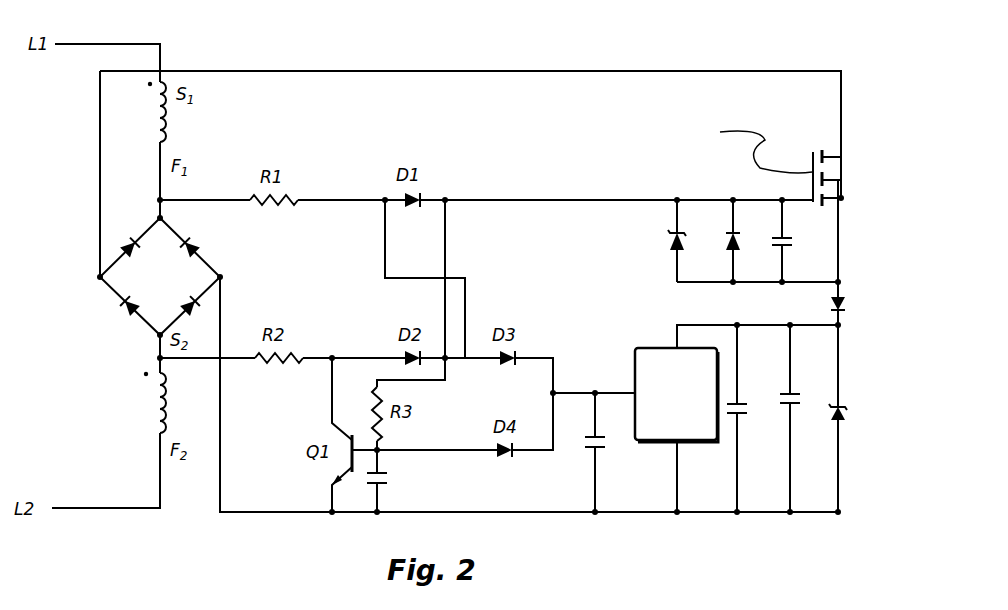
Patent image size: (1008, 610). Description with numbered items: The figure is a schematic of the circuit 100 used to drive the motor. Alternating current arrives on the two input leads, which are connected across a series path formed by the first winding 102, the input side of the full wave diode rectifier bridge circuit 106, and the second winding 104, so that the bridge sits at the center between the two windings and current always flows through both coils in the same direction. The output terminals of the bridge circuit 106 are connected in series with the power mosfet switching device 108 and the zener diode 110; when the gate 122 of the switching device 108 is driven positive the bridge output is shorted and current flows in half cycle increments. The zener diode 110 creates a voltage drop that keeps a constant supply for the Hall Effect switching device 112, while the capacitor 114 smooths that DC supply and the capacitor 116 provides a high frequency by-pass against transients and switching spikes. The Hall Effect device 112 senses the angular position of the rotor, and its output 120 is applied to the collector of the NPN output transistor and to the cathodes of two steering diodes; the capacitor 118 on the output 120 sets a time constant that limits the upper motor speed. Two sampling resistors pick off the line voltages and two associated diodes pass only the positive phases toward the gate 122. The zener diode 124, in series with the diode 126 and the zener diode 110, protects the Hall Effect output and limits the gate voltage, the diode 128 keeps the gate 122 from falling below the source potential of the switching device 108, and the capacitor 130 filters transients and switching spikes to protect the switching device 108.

The circuit 100 is at (232, 535).
The winding 102 is at (178, 116).
The second winding 104 is at (162, 400).
The full wave diode rectifier bridge circuit 106 is at (207, 244).
The HEXFET switching device 108 is at (809, 158).
The zener diode 110 is at (845, 415).
The Hall Effect switching device 112 is at (651, 345).
The capacitor 114 is at (795, 409).
The capacitor 116 is at (741, 405).
The capacitor 118 is at (603, 440).
The output of the Hall Effect device 120 is at (634, 392).
The gate 122 is at (811, 200).
The zener diode 124 is at (672, 238).
The diode 126 is at (845, 296).
The diode 128 is at (725, 247).
The capacitor 130 is at (795, 245).